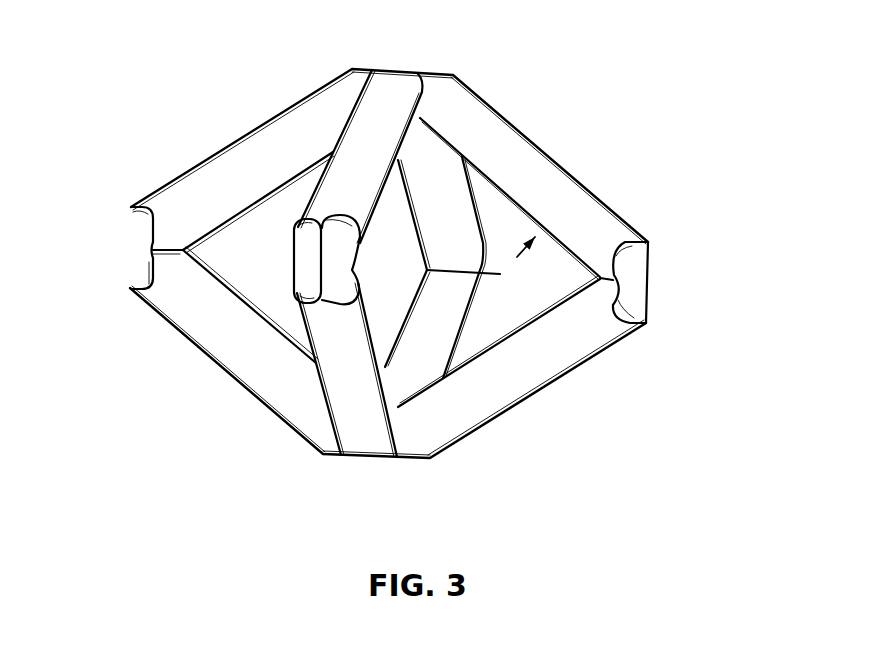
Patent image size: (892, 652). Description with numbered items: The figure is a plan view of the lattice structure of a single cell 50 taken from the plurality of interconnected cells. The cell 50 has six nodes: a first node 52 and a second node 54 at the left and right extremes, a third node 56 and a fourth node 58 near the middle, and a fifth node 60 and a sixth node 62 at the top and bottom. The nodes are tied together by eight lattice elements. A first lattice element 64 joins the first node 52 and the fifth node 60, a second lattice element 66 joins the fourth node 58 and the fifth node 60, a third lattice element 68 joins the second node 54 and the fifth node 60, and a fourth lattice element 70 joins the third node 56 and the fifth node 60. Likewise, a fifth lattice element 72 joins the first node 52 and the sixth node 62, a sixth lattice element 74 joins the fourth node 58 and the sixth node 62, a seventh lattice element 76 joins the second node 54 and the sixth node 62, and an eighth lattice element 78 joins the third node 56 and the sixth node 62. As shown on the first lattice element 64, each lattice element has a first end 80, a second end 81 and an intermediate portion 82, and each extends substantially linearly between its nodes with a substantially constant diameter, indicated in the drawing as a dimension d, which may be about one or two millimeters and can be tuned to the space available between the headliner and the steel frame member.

The cell 50 is at (631, 429).
The first node 52 is at (133, 244).
The second node 54 is at (635, 293).
The third node 56 is at (298, 273).
The fourth node 58 is at (492, 273).
The fifth node 60 is at (392, 80).
The sixth node 62 is at (374, 460).
The first lattice element 64 is at (262, 148).
The second lattice element 66 is at (454, 185).
The third lattice element 68 is at (525, 131).
The fourth lattice element 70 is at (347, 168).
The fifth lattice element 72 is at (242, 390).
The sixth lattice element 74 is at (480, 273).
The seventh lattice element 76 is at (503, 416).
The eighth lattice element 78 is at (354, 432).
The first end 80 is at (165, 213).
The second end 81 is at (354, 86).
The intermediate portion 82 is at (218, 168).
The distance d is at (584, 178).